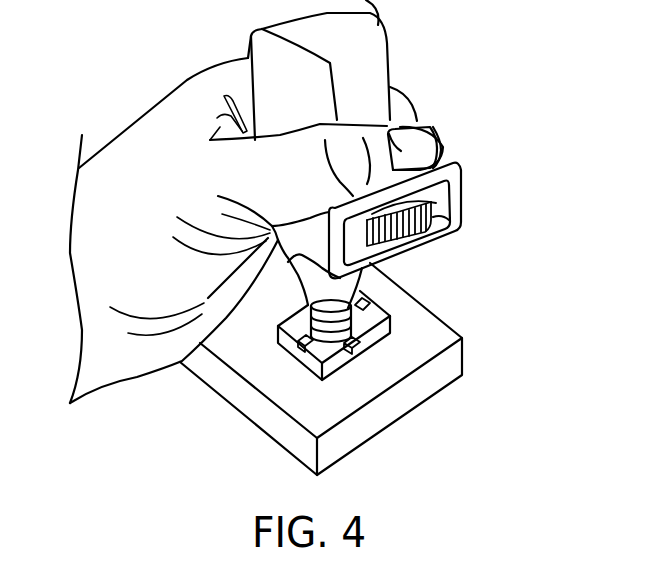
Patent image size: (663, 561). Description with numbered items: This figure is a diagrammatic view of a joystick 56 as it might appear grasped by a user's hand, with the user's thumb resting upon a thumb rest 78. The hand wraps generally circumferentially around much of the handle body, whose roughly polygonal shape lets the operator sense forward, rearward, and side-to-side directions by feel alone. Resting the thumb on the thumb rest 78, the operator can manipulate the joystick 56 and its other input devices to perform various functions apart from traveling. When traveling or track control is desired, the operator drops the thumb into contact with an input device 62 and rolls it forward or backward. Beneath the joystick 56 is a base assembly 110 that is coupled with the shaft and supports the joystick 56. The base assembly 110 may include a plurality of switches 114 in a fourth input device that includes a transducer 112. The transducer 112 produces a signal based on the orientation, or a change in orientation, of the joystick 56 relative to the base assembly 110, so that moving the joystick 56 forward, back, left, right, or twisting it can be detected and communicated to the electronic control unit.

The joystick 56 is at (486, 118).
The thumb rest 78 is at (461, 173).
The input device 62 is at (457, 222).
The transducer 112 is at (383, 298).
The switches 114 is at (361, 342).
The base assembly 110 is at (398, 395).